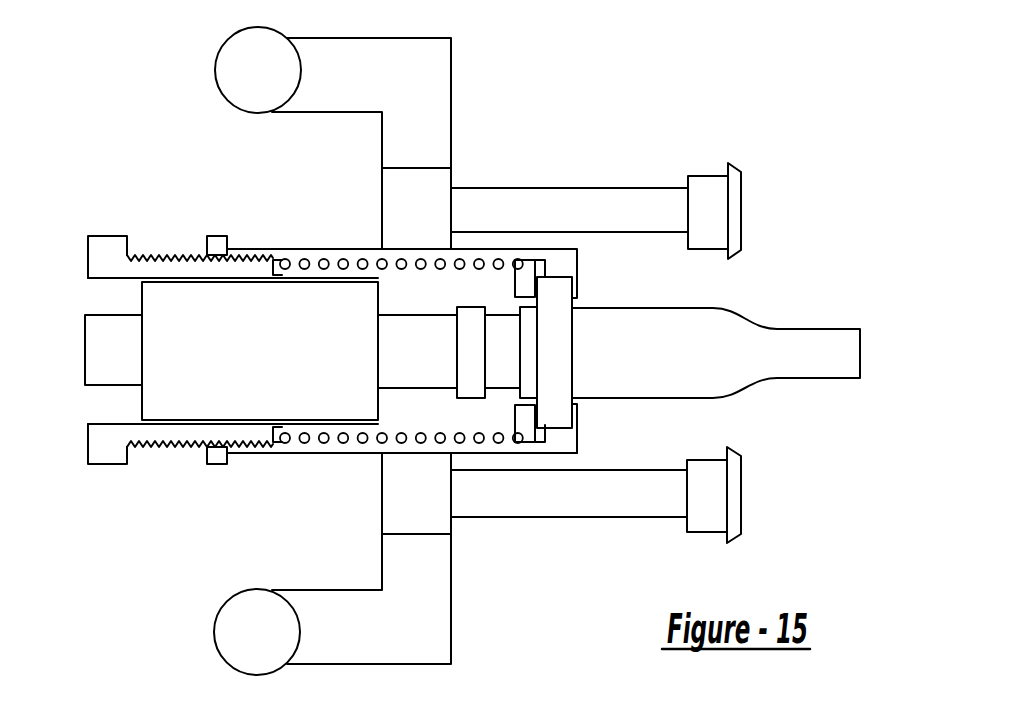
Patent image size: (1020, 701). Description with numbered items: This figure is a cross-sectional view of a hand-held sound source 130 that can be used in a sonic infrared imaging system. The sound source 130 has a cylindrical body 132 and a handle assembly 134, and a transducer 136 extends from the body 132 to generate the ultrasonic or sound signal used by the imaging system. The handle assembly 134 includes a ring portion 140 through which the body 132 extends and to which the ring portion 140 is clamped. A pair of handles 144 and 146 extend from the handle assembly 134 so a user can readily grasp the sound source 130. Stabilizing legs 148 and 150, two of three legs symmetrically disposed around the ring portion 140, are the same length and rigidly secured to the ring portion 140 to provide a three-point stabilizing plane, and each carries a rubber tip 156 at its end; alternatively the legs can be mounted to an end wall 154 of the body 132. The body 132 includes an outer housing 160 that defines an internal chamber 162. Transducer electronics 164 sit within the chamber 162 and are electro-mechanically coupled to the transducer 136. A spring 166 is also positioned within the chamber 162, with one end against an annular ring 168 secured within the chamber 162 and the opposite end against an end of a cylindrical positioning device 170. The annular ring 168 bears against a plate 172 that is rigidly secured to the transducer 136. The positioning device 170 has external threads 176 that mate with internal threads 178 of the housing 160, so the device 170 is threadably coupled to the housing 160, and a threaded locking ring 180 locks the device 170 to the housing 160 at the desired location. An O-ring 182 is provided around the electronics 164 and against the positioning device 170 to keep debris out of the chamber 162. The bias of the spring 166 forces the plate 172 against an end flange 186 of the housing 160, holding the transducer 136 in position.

The sound source 130 is at (561, 332).
The cylindrical body 132 is at (275, 464).
The handle assembly 134 is at (457, 118).
The transducer 136 is at (807, 350).
The ring portion 140 is at (435, 498).
The handle 144 is at (232, 628).
The handle 146 is at (233, 52).
The stabilizing leg 148 is at (638, 202).
The stabilizing leg 150 is at (580, 503).
The end wall 154 is at (580, 263).
The rubber tip 156 is at (737, 210).
The outer housing 160 is at (495, 452).
The internal chamber 162 is at (399, 282).
The transducer electronics 164 is at (157, 412).
The spring 166 is at (347, 442).
The annular ring 168 is at (523, 290).
The cylindrical positioning device 170 is at (147, 268).
The plate 172 is at (558, 365).
The external threads 176 is at (243, 258).
The internal threads 178 is at (262, 260).
The threaded locking ring 180 is at (213, 238).
The O-ring 182 is at (213, 422).
The end flange 186 is at (580, 412).